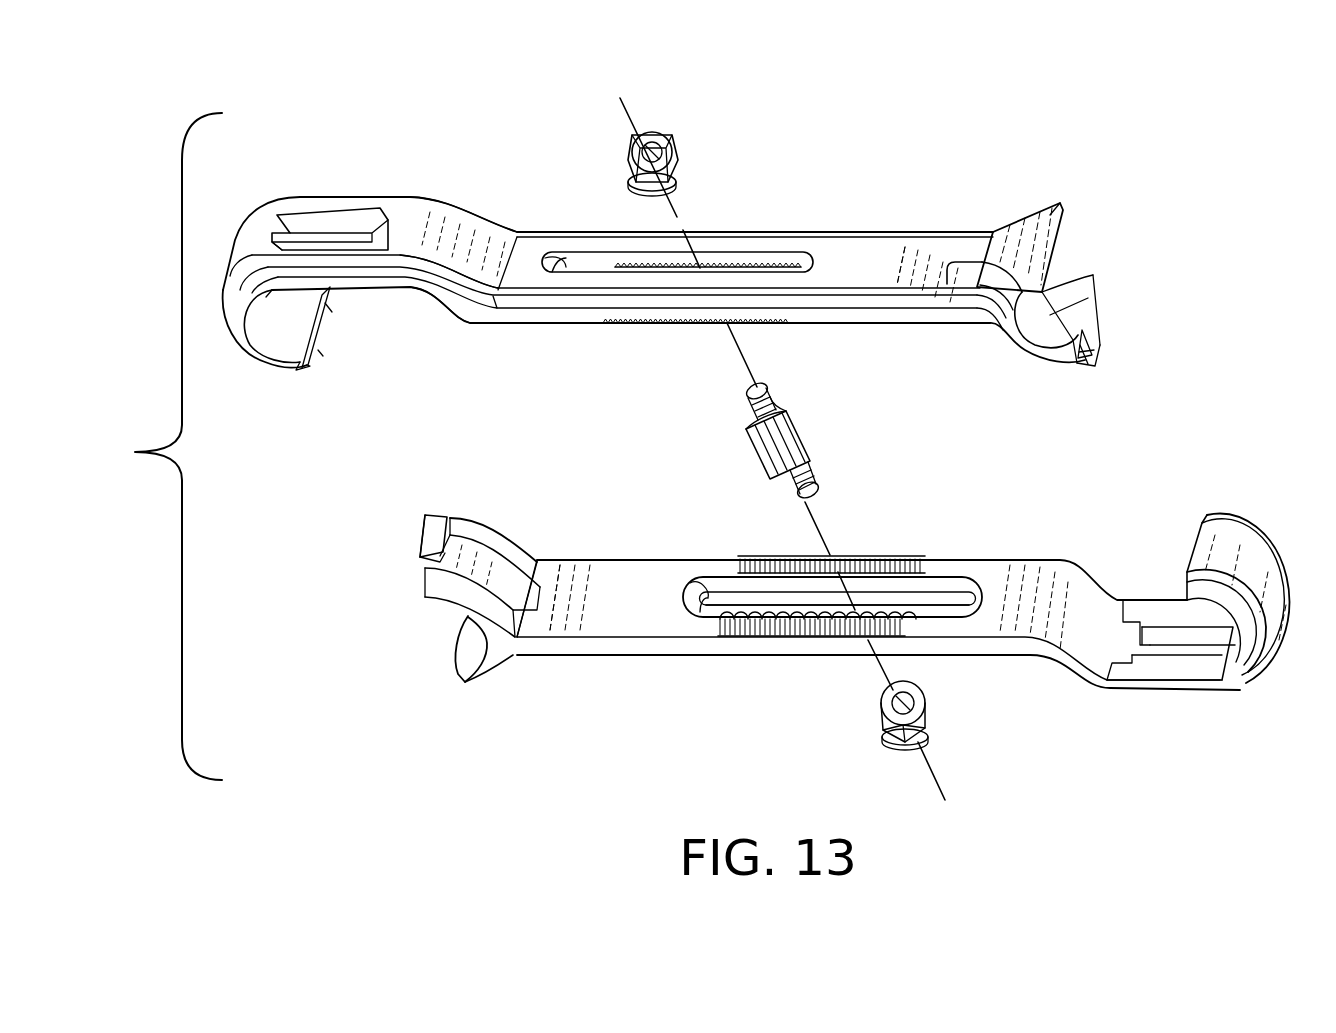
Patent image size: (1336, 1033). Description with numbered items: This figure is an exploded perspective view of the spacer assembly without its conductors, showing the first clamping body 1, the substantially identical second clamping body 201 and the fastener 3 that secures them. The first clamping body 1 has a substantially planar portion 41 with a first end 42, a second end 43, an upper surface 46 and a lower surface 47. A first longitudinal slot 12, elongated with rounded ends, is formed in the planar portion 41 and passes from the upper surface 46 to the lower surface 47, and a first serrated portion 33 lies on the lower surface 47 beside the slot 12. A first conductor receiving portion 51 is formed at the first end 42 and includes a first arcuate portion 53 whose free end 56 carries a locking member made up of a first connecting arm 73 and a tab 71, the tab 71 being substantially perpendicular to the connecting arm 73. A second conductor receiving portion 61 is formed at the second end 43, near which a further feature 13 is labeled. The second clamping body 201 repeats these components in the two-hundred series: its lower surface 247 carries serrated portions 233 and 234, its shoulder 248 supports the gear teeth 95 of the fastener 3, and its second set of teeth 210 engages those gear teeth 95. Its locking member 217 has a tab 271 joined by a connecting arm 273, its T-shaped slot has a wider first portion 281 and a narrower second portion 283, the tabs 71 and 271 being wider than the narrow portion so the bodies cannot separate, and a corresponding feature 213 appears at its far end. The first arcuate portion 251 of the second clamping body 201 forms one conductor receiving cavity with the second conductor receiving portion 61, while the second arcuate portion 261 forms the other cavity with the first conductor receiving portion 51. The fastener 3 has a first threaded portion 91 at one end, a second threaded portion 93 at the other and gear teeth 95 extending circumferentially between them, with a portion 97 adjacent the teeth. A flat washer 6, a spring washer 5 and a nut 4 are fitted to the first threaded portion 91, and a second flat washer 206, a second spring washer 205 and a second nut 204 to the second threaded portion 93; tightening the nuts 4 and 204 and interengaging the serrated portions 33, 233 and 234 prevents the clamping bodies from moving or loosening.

The first clamping body 1 is at (945, 226).
The fastener 3 is at (808, 418).
The nut 4 is at (655, 143).
The spring washer 5 is at (640, 168).
The flat washer 6 is at (668, 178).
The first longitudinal slot 12 is at (795, 240).
The pocket recess 13 is at (340, 205).
The first serrated portion 33 is at (668, 326).
The planar portion 41 is at (893, 230).
The first end 42 is at (980, 272).
The second end 43 is at (510, 258).
The upper surface 46 is at (912, 250).
The lower surface 47 is at (530, 323).
The first conductor receiving portion 51 is at (1066, 266).
The first arcuate portion 53 is at (1022, 350).
The free end 56 is at (1093, 275).
The second conductor receiving portion 61 is at (245, 340).
The tab 71 is at (1097, 350).
The first connecting arm 73 is at (1095, 313).
The first threaded portion 91 is at (752, 410).
The second threaded portion 93 is at (792, 482).
The gear teeth 95 is at (770, 452).
The shoulder 97 is at (795, 412).
The second clamping body 201 is at (1000, 562).
The second nut 204 is at (900, 748).
The second spring washer 205 is at (888, 703).
The second flat washer 206 is at (900, 735).
The second set of teeth 210 is at (935, 610).
The pocket recess 213 is at (1175, 660).
The locking member 217 is at (422, 539).
The serrated portion 233 is at (868, 558).
The second serrated portion 234 is at (750, 270).
The lower surface 247 is at (608, 580).
The shoulder 248 is at (700, 600).
The first arcuate portion 251 is at (458, 649).
The second arcuate portion 261 is at (1238, 556).
The tab 271 is at (440, 516).
The first connecting arm 273 is at (470, 524).
The first portion 281 is at (1125, 662).
The second portion 283 is at (1160, 626).